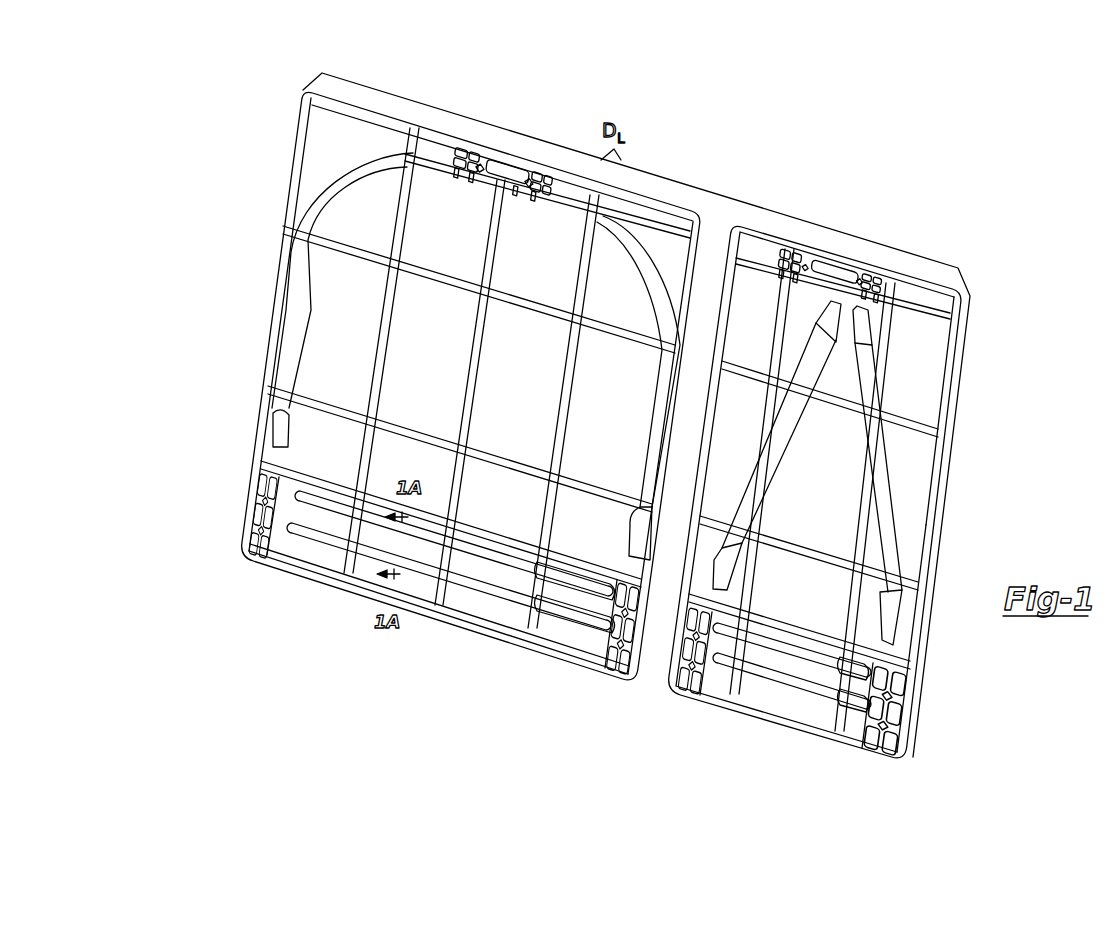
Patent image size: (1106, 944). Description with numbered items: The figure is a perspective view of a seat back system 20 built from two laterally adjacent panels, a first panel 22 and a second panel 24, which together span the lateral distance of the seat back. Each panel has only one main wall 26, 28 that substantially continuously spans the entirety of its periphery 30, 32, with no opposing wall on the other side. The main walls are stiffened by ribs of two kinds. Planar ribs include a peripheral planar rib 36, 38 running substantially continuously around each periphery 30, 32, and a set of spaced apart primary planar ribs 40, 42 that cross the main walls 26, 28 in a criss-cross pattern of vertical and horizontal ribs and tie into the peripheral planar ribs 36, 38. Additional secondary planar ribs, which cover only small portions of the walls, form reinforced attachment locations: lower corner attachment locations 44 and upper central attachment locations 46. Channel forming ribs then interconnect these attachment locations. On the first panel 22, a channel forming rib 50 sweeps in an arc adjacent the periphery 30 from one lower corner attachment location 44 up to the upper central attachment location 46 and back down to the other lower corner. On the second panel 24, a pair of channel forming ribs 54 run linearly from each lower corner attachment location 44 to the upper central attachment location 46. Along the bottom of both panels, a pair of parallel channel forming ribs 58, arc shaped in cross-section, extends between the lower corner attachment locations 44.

The seat back system 20 is at (932, 190).
The first panel 22 is at (547, 137).
The second panel 24 is at (893, 238).
The main wall 26 is at (446, 368).
The main wall 28 is at (817, 501).
The periphery 30 is at (703, 267).
The periphery 32 is at (964, 334).
The peripheral planar rib 36 is at (267, 353).
The peripheral planar rib 38 is at (915, 660).
The primary planar rib 40 is at (487, 240).
The primary planar rib 42 is at (910, 422).
The lower corner attachment location 44 is at (230, 558).
The upper central attachment location 46 is at (514, 140).
The channel forming rib 50 is at (632, 247).
The channel forming ribs 54 is at (733, 556).
The channel forming ribs 58 is at (329, 537).